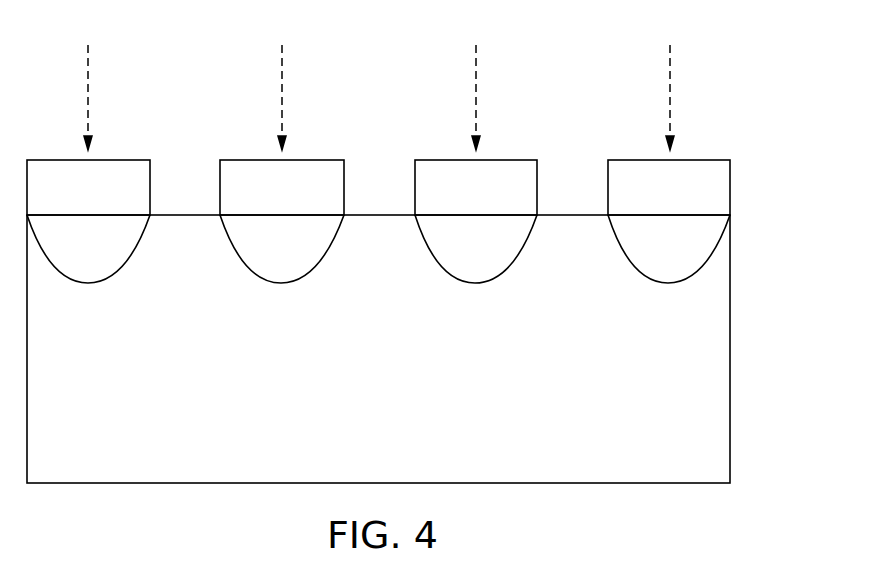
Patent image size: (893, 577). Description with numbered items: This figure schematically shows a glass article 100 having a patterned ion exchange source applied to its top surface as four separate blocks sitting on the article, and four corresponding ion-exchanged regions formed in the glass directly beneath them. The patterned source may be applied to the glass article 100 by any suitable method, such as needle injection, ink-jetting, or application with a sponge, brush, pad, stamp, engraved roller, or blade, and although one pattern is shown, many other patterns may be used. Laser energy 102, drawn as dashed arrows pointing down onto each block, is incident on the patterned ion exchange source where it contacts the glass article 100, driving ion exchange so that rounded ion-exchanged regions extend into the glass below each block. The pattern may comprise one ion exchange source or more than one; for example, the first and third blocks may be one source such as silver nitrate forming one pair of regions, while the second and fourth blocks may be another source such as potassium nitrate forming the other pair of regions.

The glass article 100 is at (745, 215).
The laser energy 102 is at (88, 82).